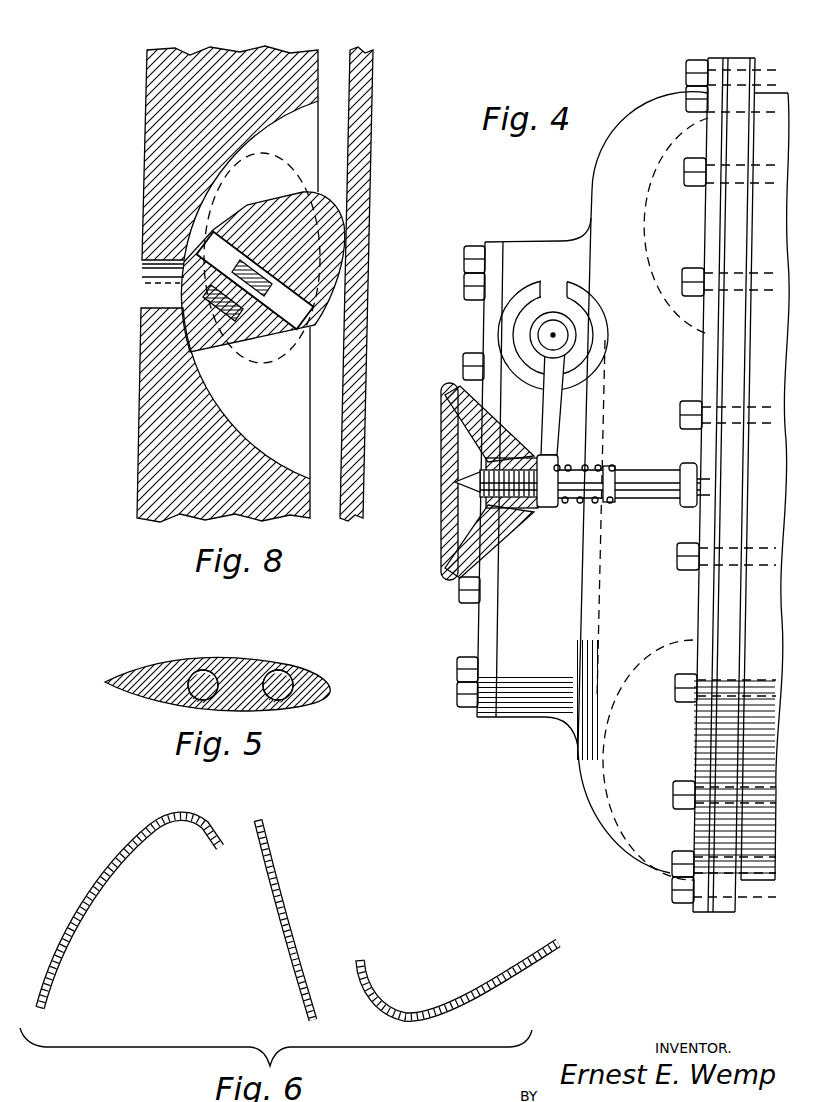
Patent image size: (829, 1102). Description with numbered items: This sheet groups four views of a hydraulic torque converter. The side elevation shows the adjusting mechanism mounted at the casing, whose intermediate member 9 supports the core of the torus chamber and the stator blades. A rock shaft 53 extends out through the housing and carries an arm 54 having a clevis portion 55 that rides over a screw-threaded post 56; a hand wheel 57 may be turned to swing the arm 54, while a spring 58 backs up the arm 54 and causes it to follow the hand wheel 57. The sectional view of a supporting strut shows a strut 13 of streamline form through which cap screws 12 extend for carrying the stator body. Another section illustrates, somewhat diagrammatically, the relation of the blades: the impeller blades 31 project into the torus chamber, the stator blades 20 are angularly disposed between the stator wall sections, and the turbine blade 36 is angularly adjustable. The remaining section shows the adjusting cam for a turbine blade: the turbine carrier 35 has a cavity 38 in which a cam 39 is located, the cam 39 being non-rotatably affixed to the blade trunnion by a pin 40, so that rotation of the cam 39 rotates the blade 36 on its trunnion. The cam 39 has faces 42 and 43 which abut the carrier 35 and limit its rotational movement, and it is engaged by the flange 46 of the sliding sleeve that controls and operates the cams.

In FIG. 4, the intermediate member 9 is at (779, 97).
In FIG. 4, the rock shaft 53 is at (548, 337).
In FIG. 4, the arm 54 is at (550, 410).
In FIG. 4, the clevis portion 55 is at (546, 506).
In FIG. 4, the screw-threaded post 56 is at (658, 489).
In FIG. 4, the hand wheel 57 is at (445, 558).
In FIG. 4, the spring 58 is at (597, 502).
In FIG. 5, the cap screws 12 is at (277, 670).
In FIG. 5, the struts 13 is at (162, 672).
In FIG. 6, the impeller blades 31 is at (92, 896).
In FIG. 6, the stator blades 20 is at (287, 937).
In FIG. 6, the turbine blade 36 is at (456, 998).
In FIG. 8, the carrier 35 is at (158, 81).
In FIG. 8, the cavity 38 is at (295, 127).
In FIG. 8, the cam 39 is at (327, 192).
In FIG. 8, the pin 40 is at (271, 340).
In FIG. 8, the cam face 42 is at (180, 331).
In FIG. 8, the cam face 43 is at (222, 220).
In FIG. 8, the flange 46 is at (355, 185).